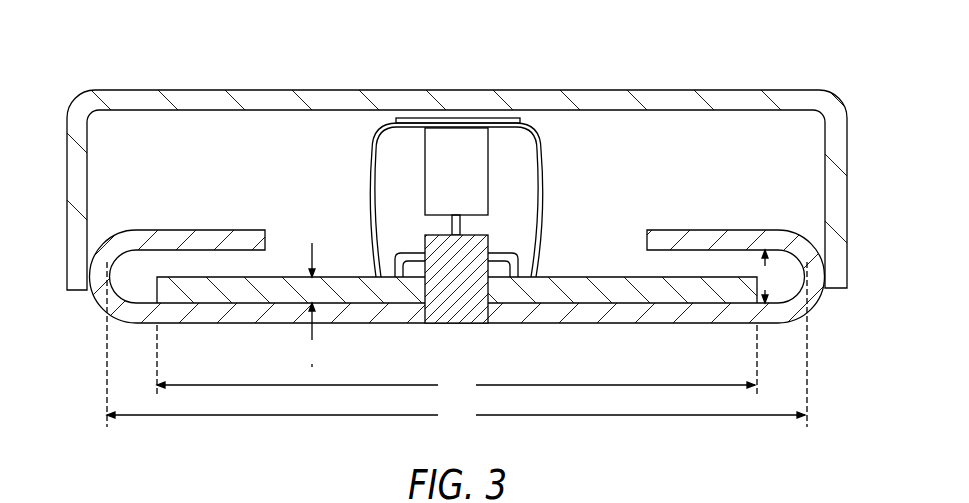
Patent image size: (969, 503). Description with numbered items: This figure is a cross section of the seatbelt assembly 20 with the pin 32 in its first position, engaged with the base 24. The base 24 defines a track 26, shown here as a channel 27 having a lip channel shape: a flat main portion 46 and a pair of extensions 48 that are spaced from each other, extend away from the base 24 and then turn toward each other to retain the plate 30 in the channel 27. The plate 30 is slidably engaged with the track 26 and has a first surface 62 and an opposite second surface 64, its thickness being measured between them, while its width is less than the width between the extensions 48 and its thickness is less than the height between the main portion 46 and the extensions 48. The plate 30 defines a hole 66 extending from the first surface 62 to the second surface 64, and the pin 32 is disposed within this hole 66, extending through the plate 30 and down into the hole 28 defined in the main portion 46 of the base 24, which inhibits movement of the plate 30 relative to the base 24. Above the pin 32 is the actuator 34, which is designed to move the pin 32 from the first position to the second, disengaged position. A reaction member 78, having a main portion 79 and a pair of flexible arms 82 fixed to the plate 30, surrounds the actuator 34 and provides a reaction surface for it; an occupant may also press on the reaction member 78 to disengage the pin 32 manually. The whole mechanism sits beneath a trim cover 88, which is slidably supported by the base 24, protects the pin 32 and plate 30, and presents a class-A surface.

The seatbelt assembly 20 is at (484, 218).
The base 24 is at (650, 313).
The track 26 is at (724, 269).
The channel 27 is at (167, 273).
The hole 28 is at (492, 310).
The plate 30 is at (457, 292).
The pin 32 is at (470, 260).
The actuator 34 is at (470, 173).
The main portion 46 is at (243, 318).
The extensions 48 is at (237, 237).
The first surface 62 is at (357, 277).
The second surface 64 is at (367, 305).
The hole 66 is at (493, 290).
The reaction member 78 is at (372, 160).
The main portion 79 is at (498, 125).
The arms 82 is at (372, 198).
The trim cover 88 is at (275, 98).